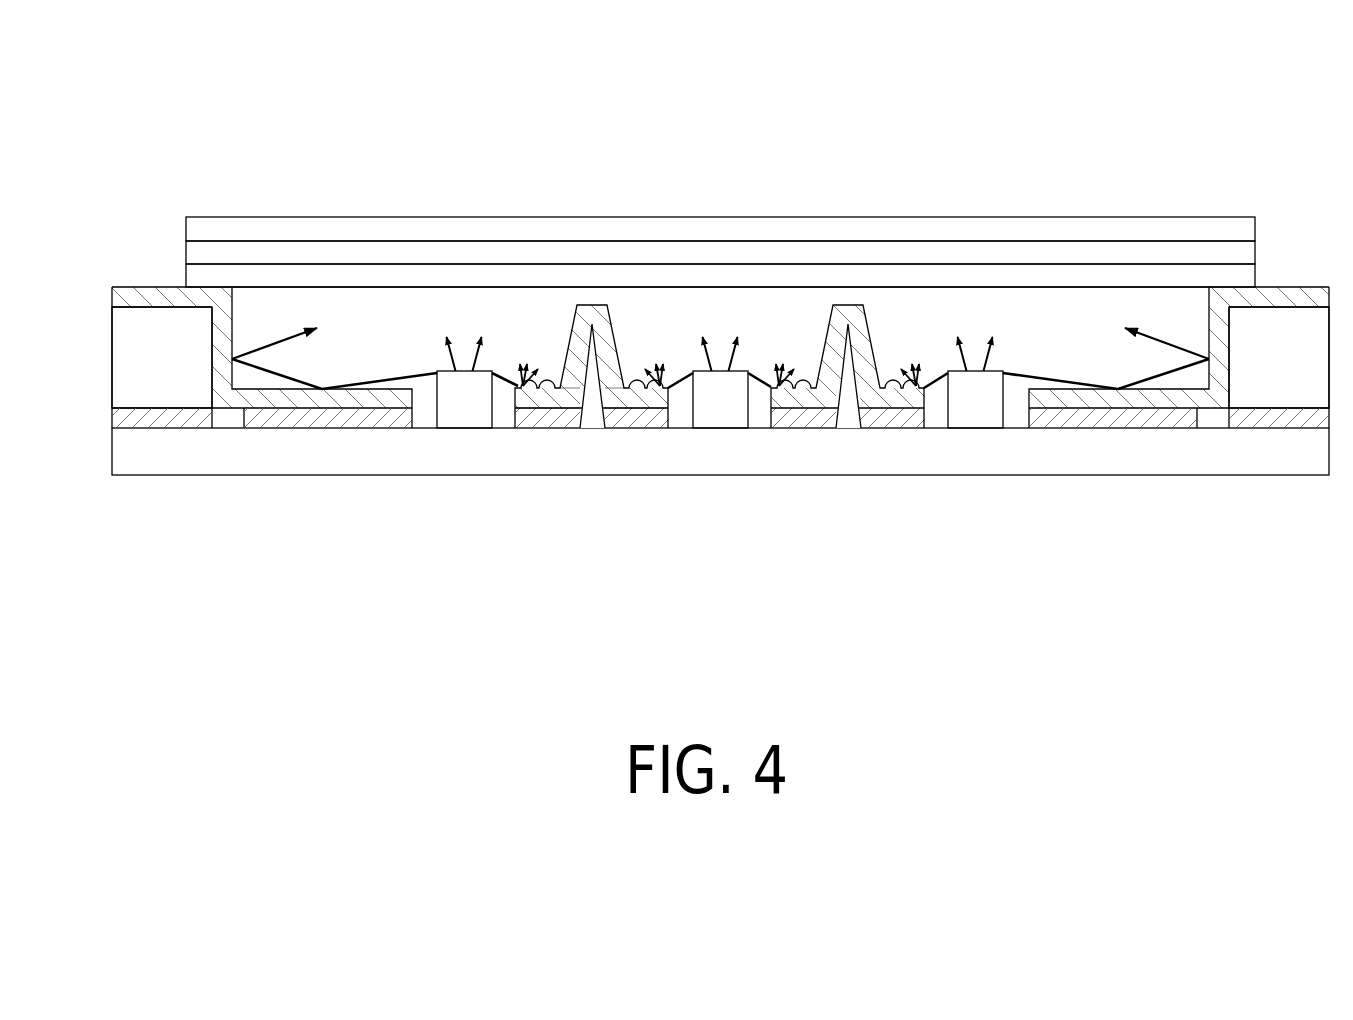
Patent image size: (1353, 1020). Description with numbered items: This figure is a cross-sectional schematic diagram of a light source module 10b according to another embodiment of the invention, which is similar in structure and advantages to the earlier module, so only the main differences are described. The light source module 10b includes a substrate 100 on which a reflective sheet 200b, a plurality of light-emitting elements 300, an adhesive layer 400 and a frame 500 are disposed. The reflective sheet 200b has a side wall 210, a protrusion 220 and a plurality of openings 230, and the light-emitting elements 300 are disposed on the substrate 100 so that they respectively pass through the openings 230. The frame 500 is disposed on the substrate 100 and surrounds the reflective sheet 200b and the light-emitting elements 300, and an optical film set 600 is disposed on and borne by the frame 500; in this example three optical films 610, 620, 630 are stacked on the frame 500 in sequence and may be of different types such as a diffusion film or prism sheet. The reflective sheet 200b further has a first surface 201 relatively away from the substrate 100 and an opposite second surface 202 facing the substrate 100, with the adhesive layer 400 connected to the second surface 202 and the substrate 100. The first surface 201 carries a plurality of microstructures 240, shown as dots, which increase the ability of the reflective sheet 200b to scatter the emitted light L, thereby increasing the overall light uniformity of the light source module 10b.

The light source module 10b is at (118, 100).
The substrate 100 is at (367, 452).
The reflective sheet 200b is at (293, 405).
The first surface 201 is at (558, 387).
The second surface 202 is at (567, 412).
The side wall 210 is at (720, 373).
The protrusion 220 is at (719, 337).
The openings 230 is at (425, 410).
The microstructures 240 is at (524, 395).
The light-emitting elements 300 is at (467, 408).
The adhesive layer 400 is at (545, 417).
The frame 500 is at (175, 398).
The optical film set 600 is at (720, 192).
The optical film 610 is at (670, 148).
The optical film 620 is at (755, 252).
The optical film 630 is at (700, 233).
The light L is at (681, 395).